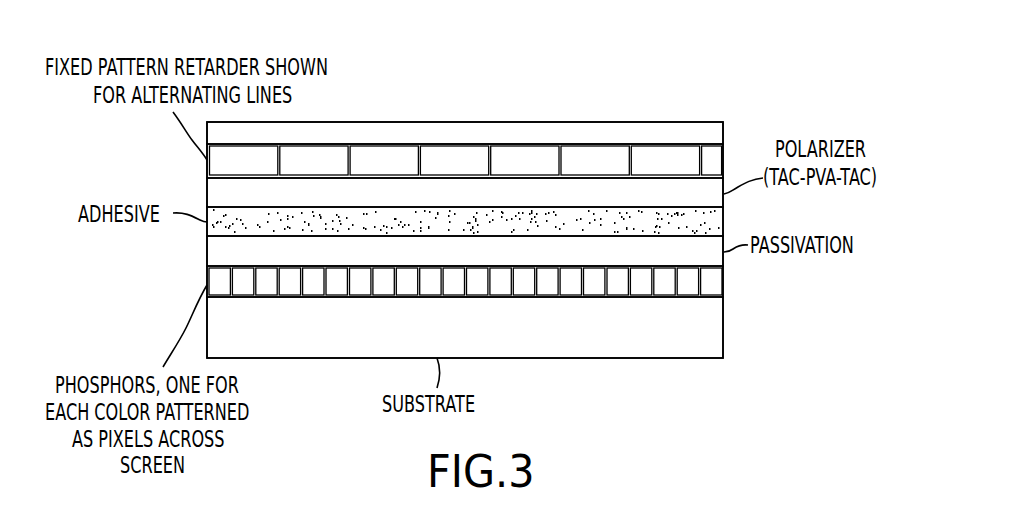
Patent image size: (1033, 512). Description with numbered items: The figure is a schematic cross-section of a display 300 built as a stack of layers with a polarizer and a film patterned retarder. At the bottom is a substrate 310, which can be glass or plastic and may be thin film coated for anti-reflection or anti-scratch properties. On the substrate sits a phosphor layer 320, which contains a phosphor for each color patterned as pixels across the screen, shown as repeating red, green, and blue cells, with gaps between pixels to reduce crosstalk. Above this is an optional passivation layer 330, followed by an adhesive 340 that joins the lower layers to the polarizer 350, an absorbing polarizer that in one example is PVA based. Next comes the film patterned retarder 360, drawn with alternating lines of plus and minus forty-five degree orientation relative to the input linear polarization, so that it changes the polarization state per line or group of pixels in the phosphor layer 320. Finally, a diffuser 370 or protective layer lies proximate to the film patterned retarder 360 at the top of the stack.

The display 300 is at (700, 380).
The substrate 310 is at (724, 333).
The phosphor layer 320 is at (724, 282).
The passivation layer 330 is at (207, 248).
The adhesive 340 is at (724, 222).
The polarizer 350 is at (207, 192).
The film patterned retarder 360 is at (724, 158).
The diffuser 370 is at (724, 122).